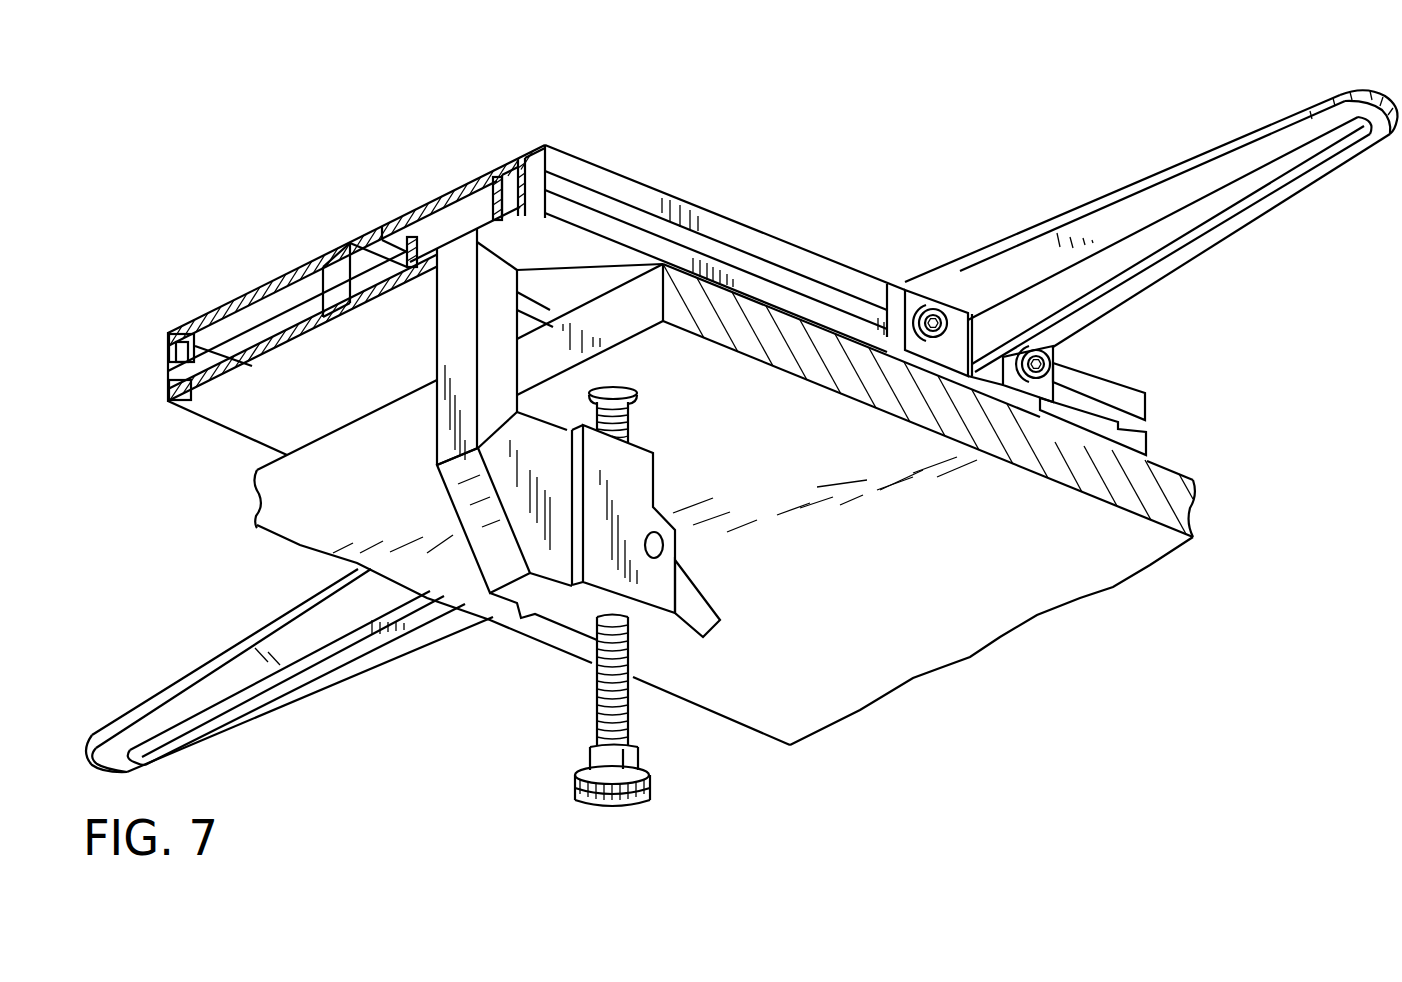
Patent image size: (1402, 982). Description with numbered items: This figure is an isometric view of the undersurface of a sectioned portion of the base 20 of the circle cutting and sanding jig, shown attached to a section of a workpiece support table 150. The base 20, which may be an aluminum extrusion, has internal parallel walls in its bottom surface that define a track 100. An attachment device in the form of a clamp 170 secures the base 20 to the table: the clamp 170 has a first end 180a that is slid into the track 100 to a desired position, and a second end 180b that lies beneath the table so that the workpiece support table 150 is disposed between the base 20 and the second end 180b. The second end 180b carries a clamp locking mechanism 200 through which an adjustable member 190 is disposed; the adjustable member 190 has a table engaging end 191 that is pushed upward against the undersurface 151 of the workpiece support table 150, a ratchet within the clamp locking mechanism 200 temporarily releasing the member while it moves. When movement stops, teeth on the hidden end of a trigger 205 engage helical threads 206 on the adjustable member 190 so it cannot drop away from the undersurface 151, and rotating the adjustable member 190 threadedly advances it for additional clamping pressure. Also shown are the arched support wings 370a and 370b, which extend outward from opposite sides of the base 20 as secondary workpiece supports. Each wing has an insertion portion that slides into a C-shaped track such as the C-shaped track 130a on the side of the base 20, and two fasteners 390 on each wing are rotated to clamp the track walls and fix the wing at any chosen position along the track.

The base 20 is at (766, 201).
The track 100 is at (450, 196).
The C-shaped track 130a is at (1162, 429).
The workpiece support table 150 is at (1143, 603).
The undersurface 151 is at (948, 615).
The clamp 170 is at (416, 365).
The first end 180a is at (442, 222).
The second end 180b is at (566, 613).
The adjustable member 190 is at (677, 799).
The table engaging end 191 is at (638, 397).
The clamp locking mechanism 200 is at (724, 569).
The trigger 205 is at (706, 600).
The helical threads 206 is at (632, 707).
The support wing 370a is at (217, 620).
The support wing 370b is at (1143, 153).
The fasteners 390 is at (1069, 355).